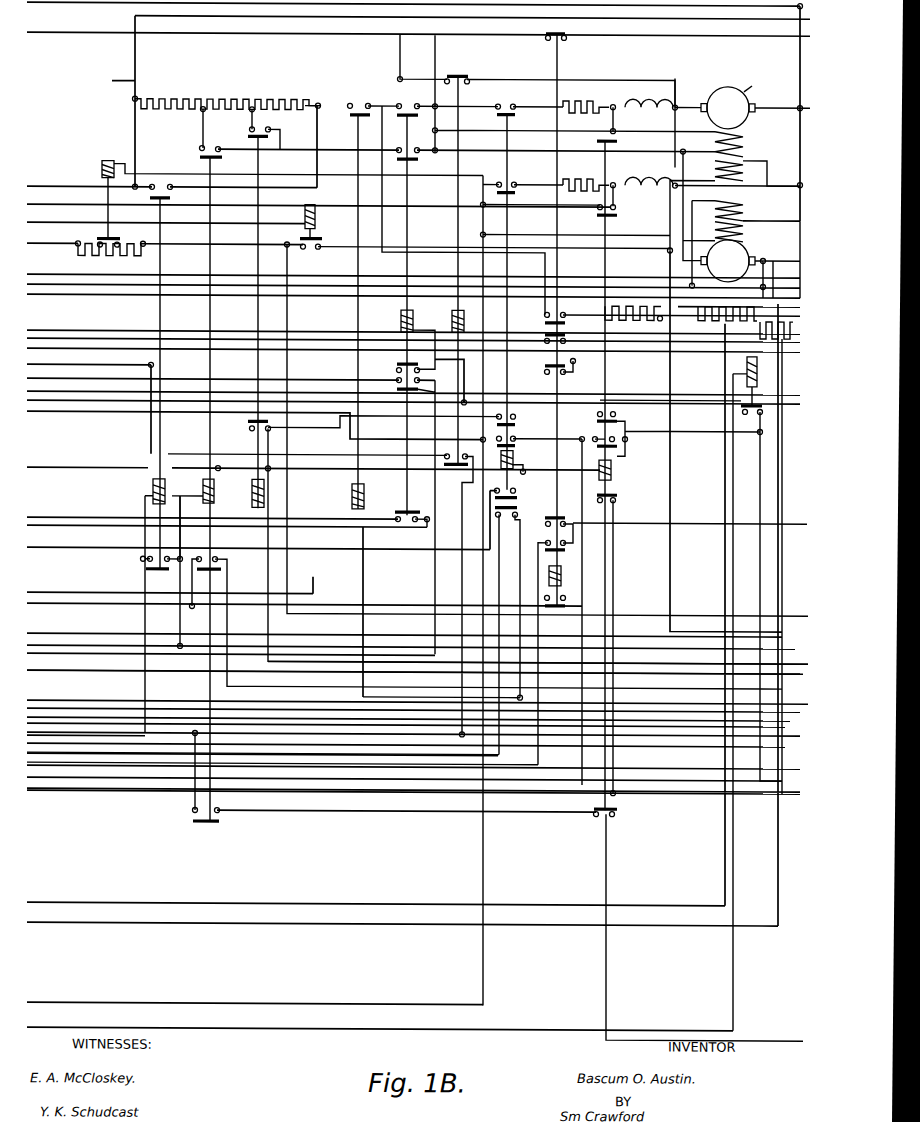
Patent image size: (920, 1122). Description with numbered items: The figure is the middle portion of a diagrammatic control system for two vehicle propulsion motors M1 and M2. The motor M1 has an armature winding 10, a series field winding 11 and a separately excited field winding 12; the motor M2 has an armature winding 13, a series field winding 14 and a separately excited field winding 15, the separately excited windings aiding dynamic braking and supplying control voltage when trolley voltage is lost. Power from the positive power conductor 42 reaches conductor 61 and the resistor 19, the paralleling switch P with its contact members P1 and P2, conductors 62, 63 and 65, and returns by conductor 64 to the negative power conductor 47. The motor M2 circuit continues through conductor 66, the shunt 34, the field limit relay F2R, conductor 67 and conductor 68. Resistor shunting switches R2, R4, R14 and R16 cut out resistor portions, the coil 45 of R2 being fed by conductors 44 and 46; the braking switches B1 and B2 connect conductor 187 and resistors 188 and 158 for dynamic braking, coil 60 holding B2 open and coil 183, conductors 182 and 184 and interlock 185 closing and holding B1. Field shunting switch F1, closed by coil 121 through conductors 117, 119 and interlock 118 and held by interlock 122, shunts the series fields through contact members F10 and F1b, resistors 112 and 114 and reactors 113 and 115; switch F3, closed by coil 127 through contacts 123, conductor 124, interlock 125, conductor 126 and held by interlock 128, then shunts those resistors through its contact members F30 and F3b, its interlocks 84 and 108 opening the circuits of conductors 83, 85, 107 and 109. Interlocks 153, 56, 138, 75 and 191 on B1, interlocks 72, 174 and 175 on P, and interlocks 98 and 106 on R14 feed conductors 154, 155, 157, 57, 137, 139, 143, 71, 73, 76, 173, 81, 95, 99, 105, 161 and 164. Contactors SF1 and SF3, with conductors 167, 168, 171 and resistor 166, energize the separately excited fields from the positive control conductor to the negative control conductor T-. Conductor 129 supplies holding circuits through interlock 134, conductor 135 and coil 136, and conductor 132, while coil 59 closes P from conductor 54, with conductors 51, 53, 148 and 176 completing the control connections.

The conductor 64 is at (415, 110).
The conductor 62 is at (418, 44).
The conductor 154 is at (472, 27).
The conductor 61 is at (174, 102).
The resistor 19 is at (228, 94).
The resistor shunting switch R14 is at (192, 463).
The resistor shunting switch R4 is at (251, 308).
The resistor shunting switch R2 is at (352, 306).
The conductor 65 is at (463, 210).
The paralleling switch P is at (415, 315).
The contact members of switch P P1 is at (409, 98).
The contact members of switch P P2 is at (414, 144).
The dynamic braking switch B2 is at (538, 249).
The conductor 63 is at (590, 164).
The interlock on switch B1 153 is at (574, 313).
The contact F10 is at (519, 297).
The contact members of switch F1 F1b is at (523, 190).
The field shunting switch F1 is at (576, 220).
The resistor 112 is at (586, 99).
The reactor 113 is at (649, 96).
The conductor 187 is at (642, 87).
The contact F30 is at (623, 458).
The resistor 114 is at (586, 193).
The reactor 115 is at (712, 193).
The contact F3b is at (620, 204).
The field shunting switch F3 is at (557, 591).
The conductor 68 is at (346, 613).
The motor M1 is at (742, 98).
The armature winding 10 is at (756, 82).
The series field winding 11 is at (741, 143).
The separately excited field winding 12 is at (734, 206).
The separately excited field winding 15 is at (729, 211).
The series field winding 14 is at (725, 232).
The armature winding 13 is at (723, 206).
The motor M2 is at (750, 260).
The conductor 66 is at (782, 279).
The contactor SF1 is at (284, 193).
The resistor shunting switch R16 is at (145, 376).
The negative power conductor 47 is at (318, 198).
The positive power conductor 42 is at (166, 216).
The conductor 167 is at (165, 237).
The resistor 166 is at (91, 256).
The conductor 168 is at (516, 422).
The contactor SF3 is at (485, 228).
The negative control conductor T- is at (414, 523).
The conductor 155 is at (413, 289).
The conductor 157 is at (413, 318).
The conductor 164 is at (435, 327).
The conductor 57 is at (413, 331).
The conductor 161 is at (413, 343).
The conductor 139 is at (418, 338).
The conductor 81 is at (90, 403).
The conductor 53 is at (231, 377).
The conductor 137 is at (413, 385).
The conductor 54 is at (413, 382).
The conductor 46 is at (256, 425).
The interlock on switch R4 118 is at (510, 538).
The conductor 119 is at (315, 445).
The conductor 117 is at (575, 618).
The conductor 71 is at (415, 571).
The actuating coil of switch P 59 is at (419, 339).
The actuating coil of switch B2 60 is at (467, 321).
The interlock on switch P1 175 is at (391, 367).
The interlock on switch P 72 is at (426, 517).
The dynamic braking switch B1 is at (661, 320).
The interlock on switch B1 56 is at (568, 334).
The interlock on switch B1 138 is at (544, 366).
The resistor 188 is at (702, 323).
The resistor 158 is at (722, 323).
The shunt 34 is at (776, 550).
The relay coil F2R is at (759, 694).
The contact members of relay FLR 123 is at (763, 402).
The conductor 124 is at (670, 393).
The interlock on switch F1 125 is at (522, 424).
The interlock on switch F1 122 is at (551, 444).
The actuating coil of switch F1 121 is at (541, 612).
The conductor 126 is at (680, 434).
The interlock on switch F3 128 is at (626, 446).
The actuating coil of switch F3 127 is at (627, 468).
The interlock on switch F3 84 is at (616, 636).
The conductor 85 is at (334, 572).
The conductor 83 is at (415, 685).
The conductor 67 is at (394, 746).
The interlock on switch B1 75 is at (551, 522).
The conductor 76 is at (690, 514).
The interlock on switch B1 185 is at (296, 644).
The actuating coil of switch B1 183 is at (569, 573).
The interlock on switch B1 191 is at (567, 593).
The conductor 184 is at (397, 660).
The conductor 73 is at (272, 518).
The conductor 173 is at (212, 509).
The interlock on switch P 174 is at (412, 510).
The actuating coil of switch R16 136 is at (179, 605).
The actuating coil of switch R2 45 is at (318, 494).
The interlock on switch R16 134 is at (162, 543).
The conductor 135 is at (333, 658).
The interlock on switch R14 98 is at (486, 622).
The conductor 99 is at (415, 651).
The conductor 182 is at (170, 583).
The conductor 129 is at (418, 645).
The conductor 171 is at (740, 443).
The conductor 44 is at (417, 616).
The conductor 95 is at (413, 692).
The conductor 148 is at (408, 697).
The conductor 176 is at (406, 702).
The conductor 143 is at (413, 696).
The conductor 105 is at (114, 772).
The conductor 132 is at (351, 764).
The conductor 51 is at (413, 784).
The interlock of switch R14 106 is at (220, 822).
The conductor 107 is at (406, 803).
The interlock on switch F3 108 is at (623, 809).
The conductor 109 is at (704, 927).